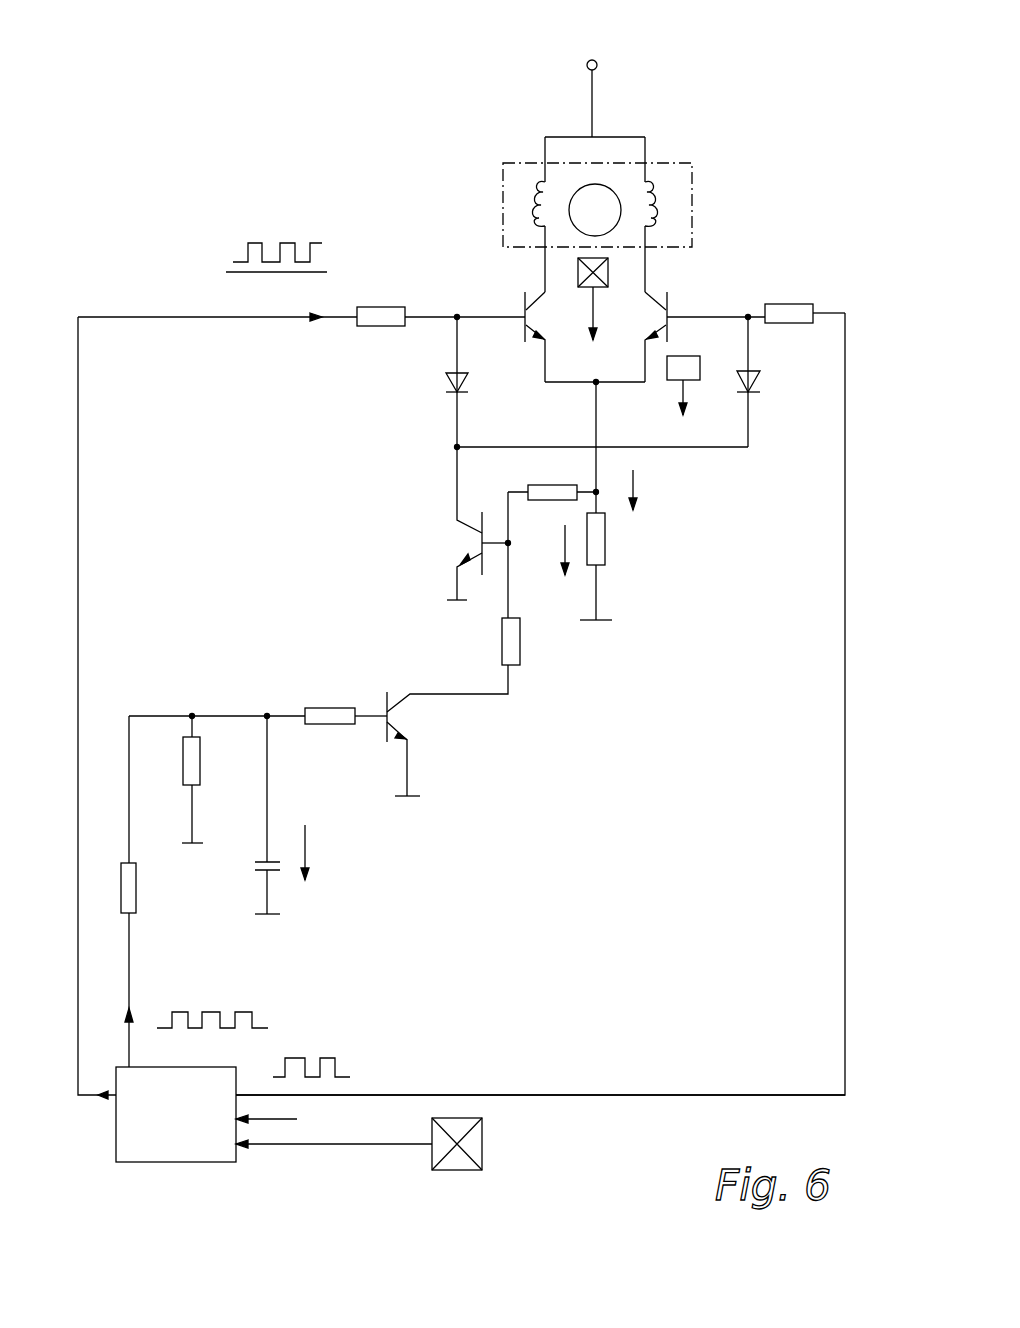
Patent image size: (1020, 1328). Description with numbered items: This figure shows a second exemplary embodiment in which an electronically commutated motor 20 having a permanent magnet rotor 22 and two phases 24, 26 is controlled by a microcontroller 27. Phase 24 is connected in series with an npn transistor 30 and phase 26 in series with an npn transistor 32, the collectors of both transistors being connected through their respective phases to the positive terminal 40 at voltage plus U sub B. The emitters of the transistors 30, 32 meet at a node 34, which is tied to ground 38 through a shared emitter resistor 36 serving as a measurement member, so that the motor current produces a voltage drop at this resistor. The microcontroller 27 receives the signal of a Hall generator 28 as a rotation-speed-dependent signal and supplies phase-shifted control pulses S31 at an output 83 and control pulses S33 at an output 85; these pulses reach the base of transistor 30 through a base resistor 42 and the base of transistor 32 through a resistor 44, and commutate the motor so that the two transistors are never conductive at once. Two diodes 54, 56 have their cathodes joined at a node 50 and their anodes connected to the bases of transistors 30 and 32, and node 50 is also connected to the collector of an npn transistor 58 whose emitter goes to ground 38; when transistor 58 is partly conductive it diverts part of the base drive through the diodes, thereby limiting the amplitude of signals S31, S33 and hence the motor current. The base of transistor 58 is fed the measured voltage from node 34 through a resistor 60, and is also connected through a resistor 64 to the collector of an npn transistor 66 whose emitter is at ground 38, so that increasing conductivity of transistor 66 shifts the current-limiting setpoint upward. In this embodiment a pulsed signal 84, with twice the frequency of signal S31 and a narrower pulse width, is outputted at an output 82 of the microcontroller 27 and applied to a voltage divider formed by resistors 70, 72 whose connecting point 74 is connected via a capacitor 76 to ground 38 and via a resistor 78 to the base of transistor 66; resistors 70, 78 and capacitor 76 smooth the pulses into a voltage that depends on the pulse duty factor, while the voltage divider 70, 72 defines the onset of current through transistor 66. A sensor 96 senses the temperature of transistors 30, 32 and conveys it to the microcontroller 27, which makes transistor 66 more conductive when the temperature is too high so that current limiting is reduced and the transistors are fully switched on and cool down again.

The motor 20 is at (692, 205).
The permanent magnet rotor 22 is at (600, 185).
The phase 24 is at (540, 182).
The phase 26 is at (650, 185).
The microcontroller 27 is at (197, 1147).
The Hall generator 28 is at (605, 272).
The npn transistor 30 is at (522, 300).
The npn transistor 32 is at (672, 298).
The node 34 is at (594, 384).
The shared emitter resistor 36 is at (605, 538).
The ground 38 is at (600, 622).
The positive terminal 40 is at (587, 62).
The base resistor 42 is at (372, 307).
The resistor 44 is at (785, 325).
The node 50 is at (455, 447).
The diode 54 is at (448, 385).
The diode 56 is at (762, 383).
The npn transistor 58 is at (478, 535).
The resistor 60 is at (540, 485).
The resistor 64 is at (522, 650).
The npn transistor 66 is at (387, 703).
The resistor 70 is at (137, 890).
The resistor 72 is at (202, 760).
The connecting point 74 is at (192, 714).
The capacitor 76 is at (255, 865).
The resistor 78 is at (330, 707).
The output 82 is at (131, 1048).
The output 83 is at (80, 1090).
The pulsed signal 84 is at (245, 1012).
The output 85 is at (530, 1095).
The sensor 96 is at (700, 368).
The control pulses S31 is at (253, 243).
The control pulses S33 is at (325, 1058).